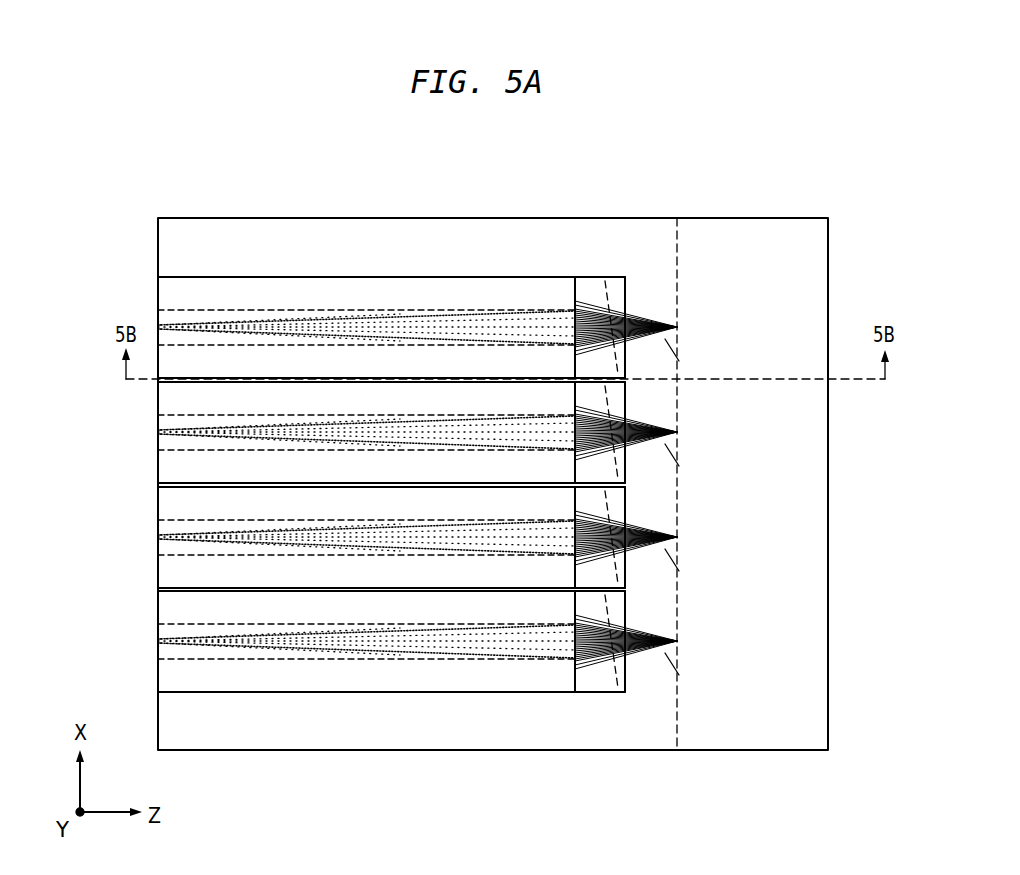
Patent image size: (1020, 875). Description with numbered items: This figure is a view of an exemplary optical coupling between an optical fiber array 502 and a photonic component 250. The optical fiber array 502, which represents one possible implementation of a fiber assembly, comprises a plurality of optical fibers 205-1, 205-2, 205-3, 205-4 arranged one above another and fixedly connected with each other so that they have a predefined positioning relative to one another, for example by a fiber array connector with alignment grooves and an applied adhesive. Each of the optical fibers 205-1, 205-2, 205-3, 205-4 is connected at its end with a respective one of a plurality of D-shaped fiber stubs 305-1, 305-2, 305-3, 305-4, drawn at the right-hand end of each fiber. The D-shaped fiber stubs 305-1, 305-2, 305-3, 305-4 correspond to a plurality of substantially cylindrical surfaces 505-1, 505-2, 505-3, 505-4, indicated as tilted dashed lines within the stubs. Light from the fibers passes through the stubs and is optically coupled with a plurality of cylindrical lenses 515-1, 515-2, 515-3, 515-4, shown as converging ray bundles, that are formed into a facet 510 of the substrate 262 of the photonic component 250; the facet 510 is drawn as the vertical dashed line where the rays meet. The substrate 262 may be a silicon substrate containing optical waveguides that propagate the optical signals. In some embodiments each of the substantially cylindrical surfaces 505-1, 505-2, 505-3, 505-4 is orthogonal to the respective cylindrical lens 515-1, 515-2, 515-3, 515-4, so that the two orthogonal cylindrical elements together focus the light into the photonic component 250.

The optical fiber array 502 is at (625, 188).
The optical fiber 205-1 is at (150, 300).
The optical fiber 205-2 is at (150, 405).
The optical fiber 205-3 is at (150, 510).
The optical fiber 205-4 is at (150, 612).
The D-shaped fiber stub 305-1 is at (595, 278).
The D-shaped fiber stub 305-2 is at (597, 383).
The D-shaped fiber stub 305-3 is at (597, 488).
The D-shaped fiber stub 305-4 is at (597, 592).
The substantially cylindrical surface 505-1 is at (623, 291).
The substantially cylindrical surface 505-2 is at (624, 395).
The substantially cylindrical surface 505-3 is at (624, 500).
The substantially cylindrical surface 505-4 is at (624, 604).
The cylindrical lens 515-1 is at (665, 315).
The cylindrical lens 515-2 is at (665, 420).
The cylindrical lens 515-3 is at (665, 525).
The cylindrical lens 515-4 is at (665, 629).
The facet 510 is at (679, 233).
The photonic component 250 is at (829, 481).
The substrate 262 is at (814, 601).